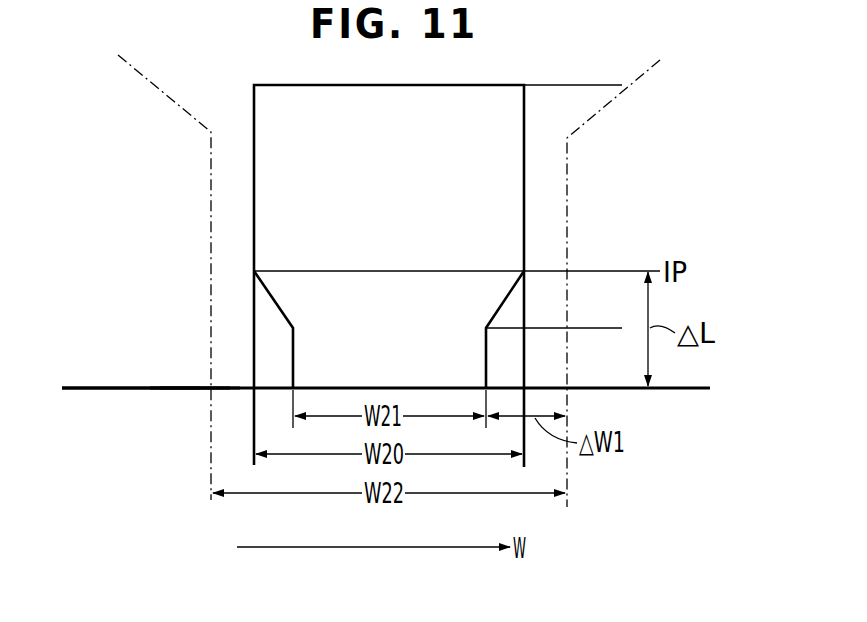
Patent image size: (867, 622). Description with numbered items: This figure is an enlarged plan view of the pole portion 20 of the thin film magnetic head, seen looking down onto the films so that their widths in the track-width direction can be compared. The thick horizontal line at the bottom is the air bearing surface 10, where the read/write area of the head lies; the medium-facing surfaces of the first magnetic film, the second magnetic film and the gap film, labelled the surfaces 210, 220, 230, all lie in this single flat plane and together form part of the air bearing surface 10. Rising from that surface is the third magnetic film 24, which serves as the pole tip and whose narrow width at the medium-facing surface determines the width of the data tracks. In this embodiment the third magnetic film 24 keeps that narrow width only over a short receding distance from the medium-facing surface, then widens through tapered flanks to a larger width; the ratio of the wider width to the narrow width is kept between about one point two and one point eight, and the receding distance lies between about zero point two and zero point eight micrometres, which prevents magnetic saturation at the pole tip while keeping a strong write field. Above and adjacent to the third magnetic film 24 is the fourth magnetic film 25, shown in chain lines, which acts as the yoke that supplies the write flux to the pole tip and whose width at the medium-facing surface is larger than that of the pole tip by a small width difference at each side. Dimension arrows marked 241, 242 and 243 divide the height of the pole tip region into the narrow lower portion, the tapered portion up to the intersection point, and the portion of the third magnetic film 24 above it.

The air bearing surface 10 is at (634, 397).
The pole portion 20 is at (209, 201).
The third magnetic film 24 is at (298, 357).
The fourth magnetic film 25 is at (214, 265).
The surface facing opposite the medium of the first magnetic film 210 is at (103, 389).
The surface facing opposite the medium of the second magnetic film 220 is at (187, 390).
The surface facing opposite the medium of the gap film 230 is at (199, 427).
The lower height of tapered portion 241 is at (604, 329).
The upper height of tapered portion 242 is at (604, 272).
The height of upper portion 243 is at (604, 86).